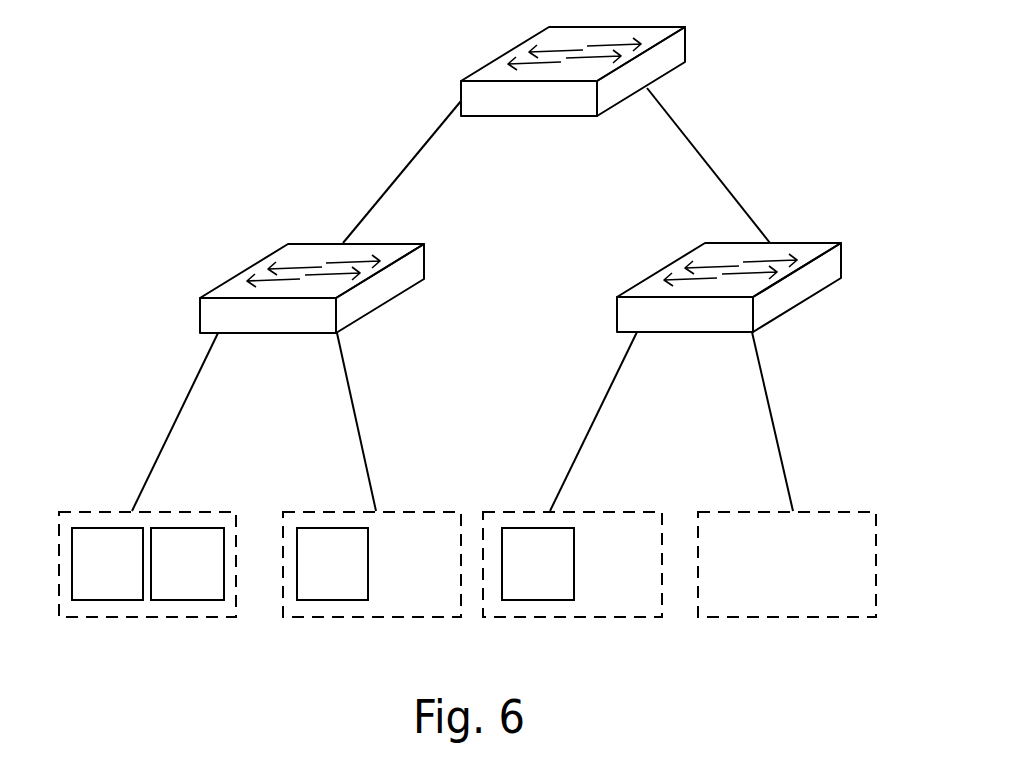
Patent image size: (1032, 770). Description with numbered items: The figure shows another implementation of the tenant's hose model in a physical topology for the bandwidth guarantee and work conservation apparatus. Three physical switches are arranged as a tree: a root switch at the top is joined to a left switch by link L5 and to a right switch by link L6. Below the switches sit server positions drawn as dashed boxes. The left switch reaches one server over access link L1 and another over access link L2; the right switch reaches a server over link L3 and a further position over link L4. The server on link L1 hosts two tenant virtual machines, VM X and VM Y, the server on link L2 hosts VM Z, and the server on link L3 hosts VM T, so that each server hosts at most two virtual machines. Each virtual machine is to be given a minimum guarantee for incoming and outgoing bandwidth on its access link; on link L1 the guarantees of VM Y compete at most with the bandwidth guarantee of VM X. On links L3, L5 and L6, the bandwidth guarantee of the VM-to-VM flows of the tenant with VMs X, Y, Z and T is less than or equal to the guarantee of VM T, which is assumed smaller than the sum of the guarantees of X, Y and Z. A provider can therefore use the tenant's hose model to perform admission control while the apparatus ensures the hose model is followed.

The access link L1 is at (170, 422).
The access link L2 is at (371, 422).
The link L3 is at (590, 421).
The link L4 is at (783, 421).
The link L5 is at (402, 172).
The link L6 is at (708, 165).
The VM X is at (107, 564).
The VM Y is at (187, 564).
The VM Z is at (332, 564).
The VM T is at (538, 564).